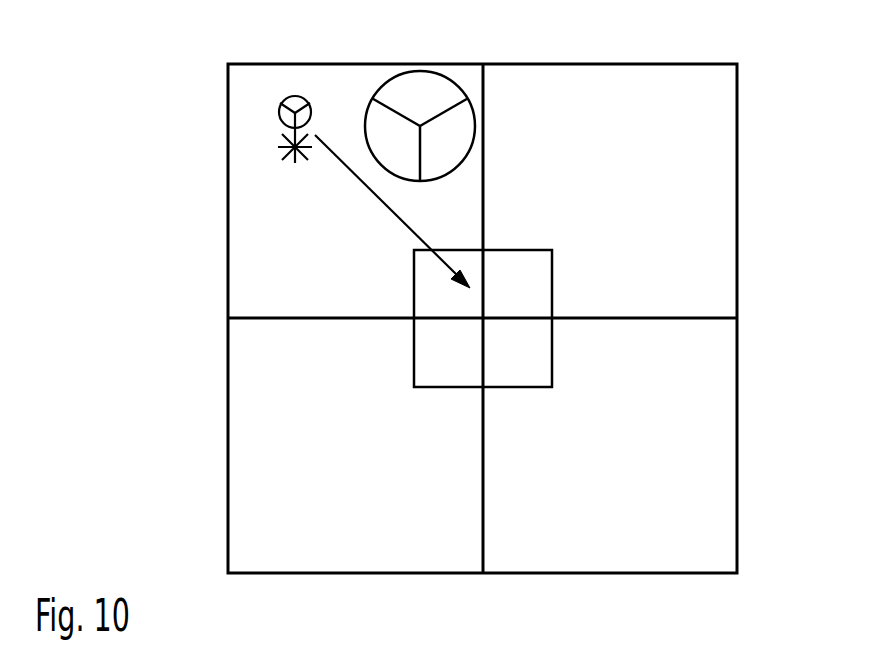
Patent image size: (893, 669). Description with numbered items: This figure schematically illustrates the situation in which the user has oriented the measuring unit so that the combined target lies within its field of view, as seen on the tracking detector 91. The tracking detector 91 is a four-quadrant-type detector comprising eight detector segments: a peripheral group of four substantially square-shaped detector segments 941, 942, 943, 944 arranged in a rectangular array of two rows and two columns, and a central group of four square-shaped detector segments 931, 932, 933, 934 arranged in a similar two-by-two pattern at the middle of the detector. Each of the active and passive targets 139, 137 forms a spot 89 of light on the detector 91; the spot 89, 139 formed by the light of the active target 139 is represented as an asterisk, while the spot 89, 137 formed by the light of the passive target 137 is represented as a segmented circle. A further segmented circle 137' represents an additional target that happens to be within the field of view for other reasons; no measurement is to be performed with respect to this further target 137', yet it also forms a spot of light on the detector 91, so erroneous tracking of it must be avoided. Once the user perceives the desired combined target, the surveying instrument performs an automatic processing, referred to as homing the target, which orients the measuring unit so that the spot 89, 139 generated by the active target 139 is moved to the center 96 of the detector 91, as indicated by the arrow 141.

The tracking detector 91 is at (738, 168).
The detector segment 941 is at (636, 208).
The detector segment 942 is at (636, 466).
The detector segment 943 is at (339, 464).
The detector segment 944 is at (339, 300).
The detector segment 931 is at (520, 265).
The detector segment 932 is at (520, 372).
The detector segment 933 is at (445, 372).
The detector segment 934 is at (427, 302).
The center 96 is at (483, 320).
The arrow 141 is at (387, 205).
The further target 137' is at (424, 90).
The passive target 137 is at (300, 64).
The active target 139 is at (286, 165).
The spot 89 is at (290, 116).